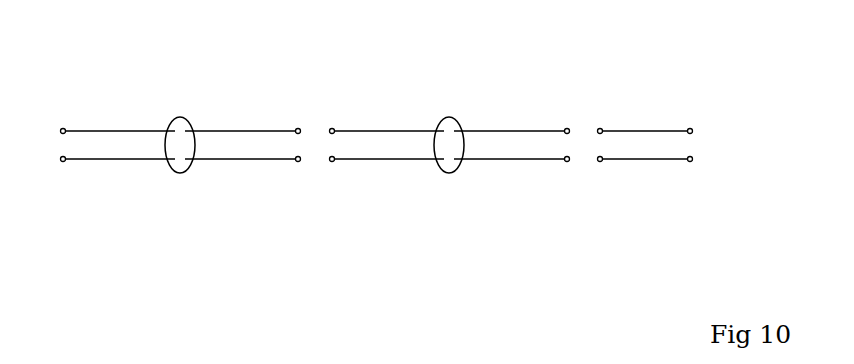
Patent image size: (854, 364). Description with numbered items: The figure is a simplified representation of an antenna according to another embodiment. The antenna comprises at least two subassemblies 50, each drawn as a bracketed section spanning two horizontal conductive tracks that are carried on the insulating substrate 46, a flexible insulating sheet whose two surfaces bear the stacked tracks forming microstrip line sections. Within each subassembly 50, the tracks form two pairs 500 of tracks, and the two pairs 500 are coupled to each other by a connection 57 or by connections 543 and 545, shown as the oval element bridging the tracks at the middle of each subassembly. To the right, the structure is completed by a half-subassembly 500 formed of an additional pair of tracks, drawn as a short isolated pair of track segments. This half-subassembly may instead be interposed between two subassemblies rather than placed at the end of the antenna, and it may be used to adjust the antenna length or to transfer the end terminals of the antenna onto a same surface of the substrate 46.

The subassembly 50 is at (316, 163).
The insulating substrate 46 is at (239, 148).
The pair of tracks 500 is at (95, 175).
The connection 543 is at (177, 174).
The connection 545 is at (316, 196).
The connection 57 is at (316, 196).